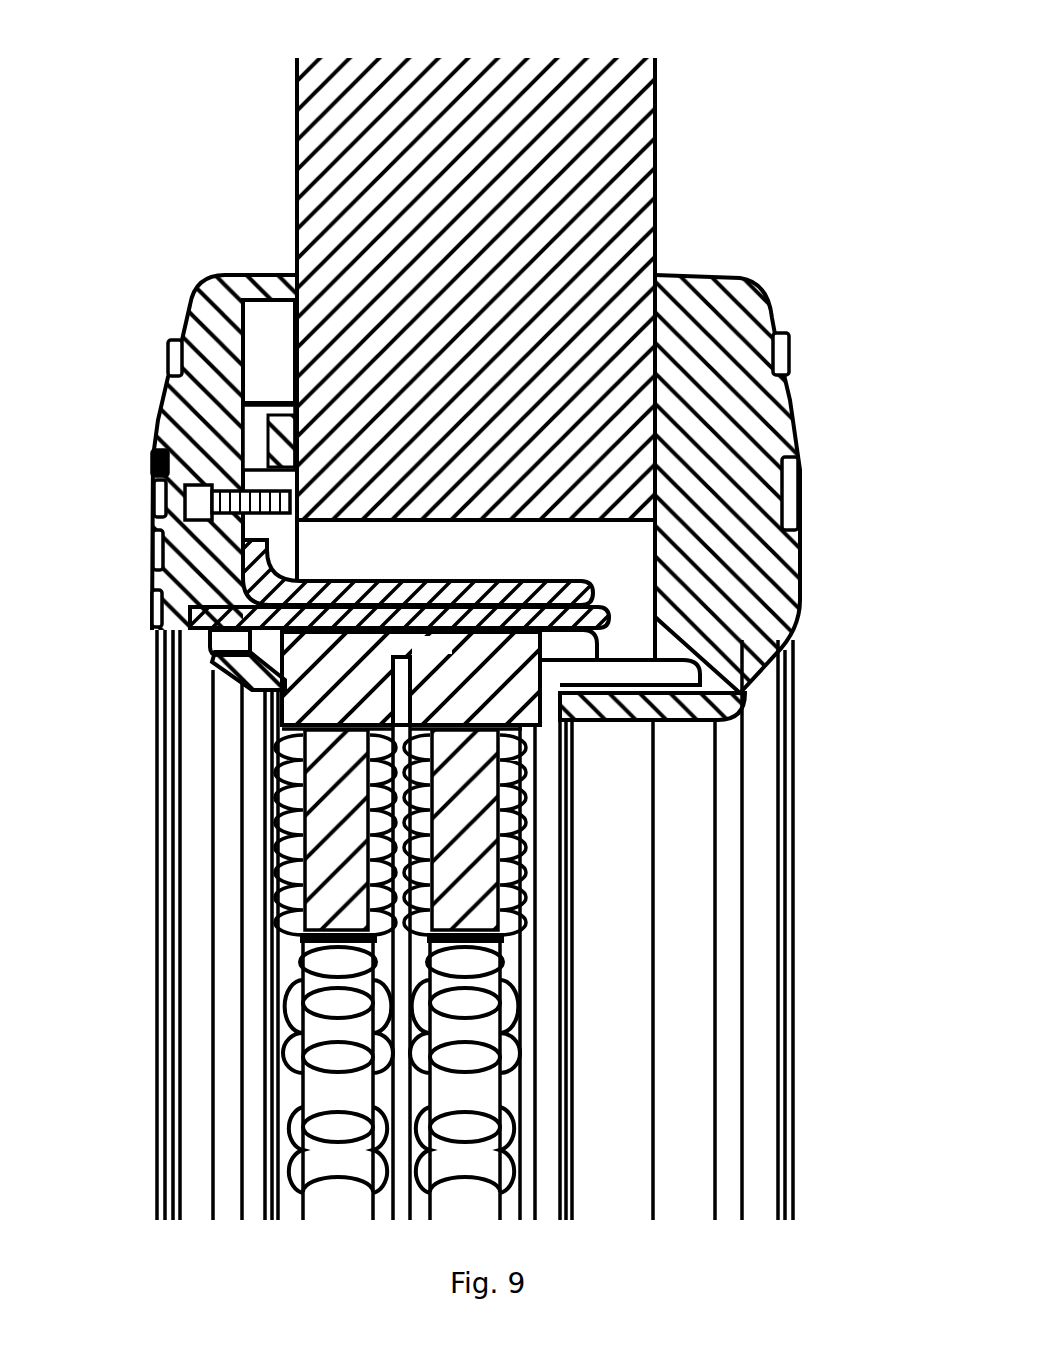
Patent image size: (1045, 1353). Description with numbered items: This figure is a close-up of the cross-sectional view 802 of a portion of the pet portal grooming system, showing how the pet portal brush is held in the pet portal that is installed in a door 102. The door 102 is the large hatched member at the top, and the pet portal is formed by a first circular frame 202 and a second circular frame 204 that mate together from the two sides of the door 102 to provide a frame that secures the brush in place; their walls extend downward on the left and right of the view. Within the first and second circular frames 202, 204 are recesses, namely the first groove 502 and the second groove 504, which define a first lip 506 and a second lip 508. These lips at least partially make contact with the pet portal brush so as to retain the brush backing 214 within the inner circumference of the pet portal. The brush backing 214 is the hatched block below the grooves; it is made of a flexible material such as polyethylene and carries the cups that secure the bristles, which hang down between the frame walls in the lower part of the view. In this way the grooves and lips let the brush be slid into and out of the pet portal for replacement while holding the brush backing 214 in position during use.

The cross-sectional view 802 is at (748, 65).
The door 102 is at (658, 225).
The second groove 504 is at (548, 582).
The first groove 502 is at (218, 632).
The first lip 506 is at (268, 669).
The brush backing 214 is at (411, 678).
The second lip 508 is at (528, 688).
The first circular frame 202 is at (150, 878).
The second circular frame 204 is at (800, 868).